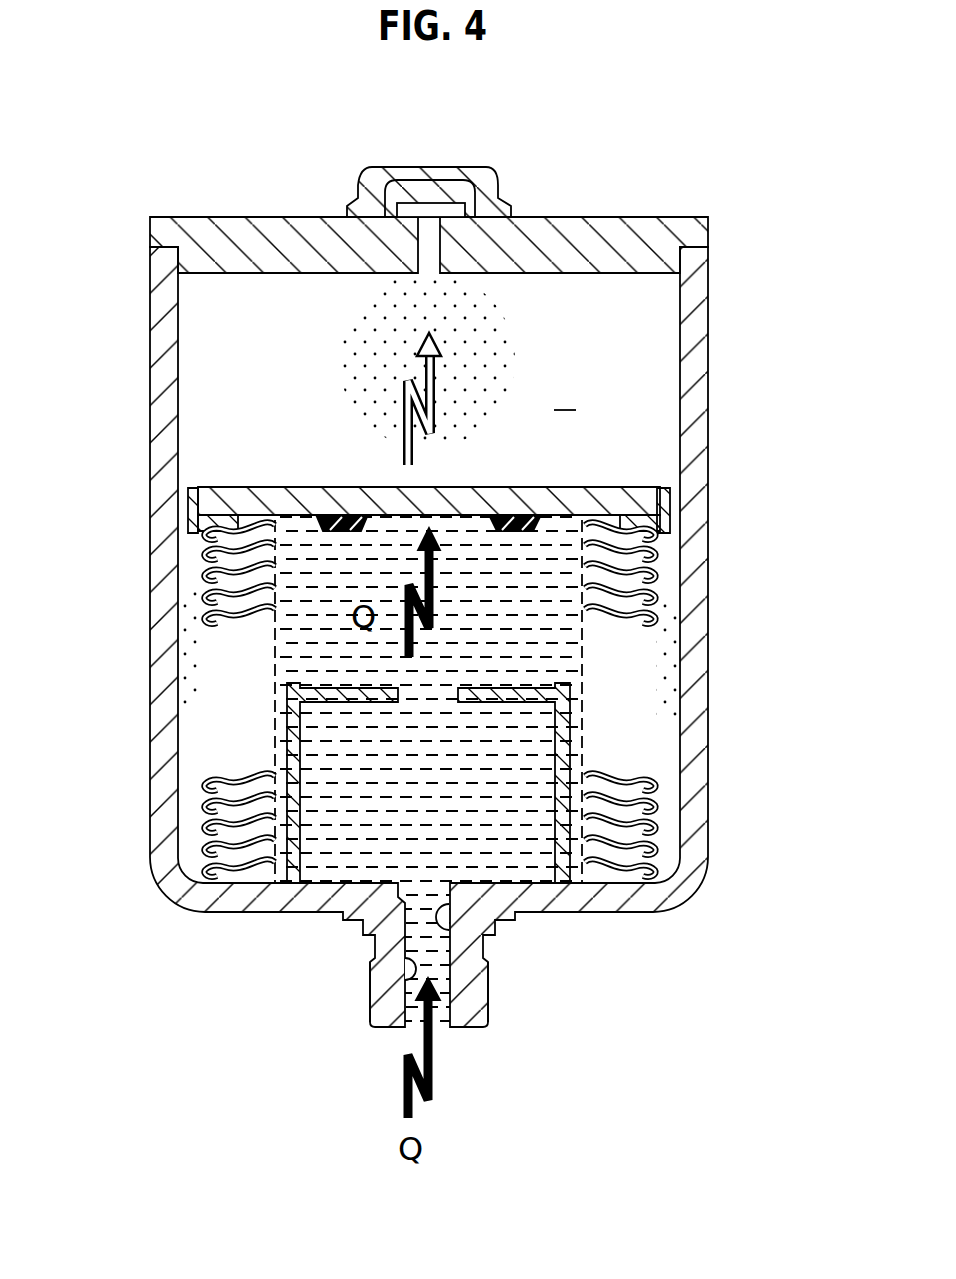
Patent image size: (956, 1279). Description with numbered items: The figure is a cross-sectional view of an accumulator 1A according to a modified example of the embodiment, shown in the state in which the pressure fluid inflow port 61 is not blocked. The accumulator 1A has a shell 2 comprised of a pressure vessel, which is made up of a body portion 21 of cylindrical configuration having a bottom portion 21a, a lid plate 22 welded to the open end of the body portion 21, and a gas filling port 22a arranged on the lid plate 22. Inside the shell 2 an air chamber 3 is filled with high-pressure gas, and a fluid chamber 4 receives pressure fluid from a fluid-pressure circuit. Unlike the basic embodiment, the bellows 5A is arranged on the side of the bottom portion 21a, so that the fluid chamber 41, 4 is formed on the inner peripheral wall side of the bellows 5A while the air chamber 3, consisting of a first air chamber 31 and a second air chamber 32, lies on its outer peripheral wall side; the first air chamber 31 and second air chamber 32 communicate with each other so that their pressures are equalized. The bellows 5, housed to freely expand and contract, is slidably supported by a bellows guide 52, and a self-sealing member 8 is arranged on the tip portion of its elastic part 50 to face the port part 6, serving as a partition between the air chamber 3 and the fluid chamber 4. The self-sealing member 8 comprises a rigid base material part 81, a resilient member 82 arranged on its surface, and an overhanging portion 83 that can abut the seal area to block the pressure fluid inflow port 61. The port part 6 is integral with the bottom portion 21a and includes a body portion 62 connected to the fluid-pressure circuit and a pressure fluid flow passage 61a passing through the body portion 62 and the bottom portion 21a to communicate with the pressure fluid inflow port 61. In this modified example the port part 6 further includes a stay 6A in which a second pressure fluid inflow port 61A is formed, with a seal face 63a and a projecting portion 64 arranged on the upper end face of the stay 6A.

The accumulator 1A is at (734, 151).
The shell 2 is at (494, 569).
The body portion 21 is at (708, 290).
The bottom portion 21a is at (235, 912).
The lid plate 22 is at (470, 192).
The gas filling port 22a is at (438, 240).
The air chamber 3 is at (600, 478).
The first air chamber 31 is at (538, 328).
The second air chamber 32 is at (665, 770).
The fluid chamber 4 is at (534, 701).
The fluid chamber 41 is at (535, 648).
The bellows 5 is at (358, 699).
The bellows 5A is at (191, 832).
The elastic part 50 is at (222, 752).
The bellows guide 52 is at (188, 490).
The port part 6 is at (425, 741).
The stay 6A is at (298, 752).
The pressure fluid inflow port 61 is at (430, 968).
The pressure fluid flow passage 61a is at (408, 965).
The second pressure fluid inflow port 61A is at (405, 688).
The body portion 62 is at (490, 1003).
The seal face 63a is at (520, 683).
The projecting portion 64 is at (290, 683).
The self-sealing member 8 is at (449, 566).
The base material part 81 is at (560, 508).
The resilient member 82 is at (465, 520).
The overhanging portion 83 is at (340, 527).